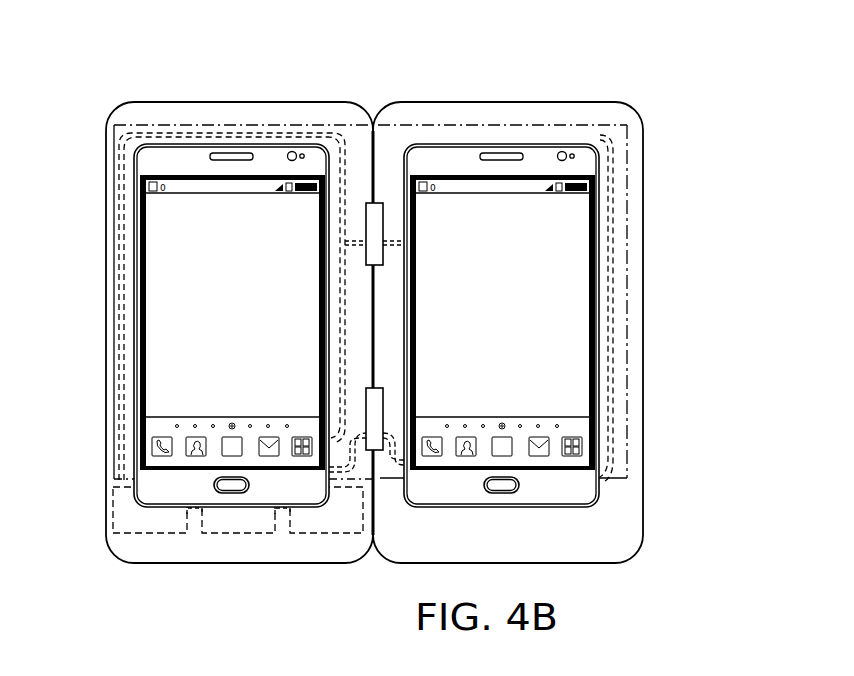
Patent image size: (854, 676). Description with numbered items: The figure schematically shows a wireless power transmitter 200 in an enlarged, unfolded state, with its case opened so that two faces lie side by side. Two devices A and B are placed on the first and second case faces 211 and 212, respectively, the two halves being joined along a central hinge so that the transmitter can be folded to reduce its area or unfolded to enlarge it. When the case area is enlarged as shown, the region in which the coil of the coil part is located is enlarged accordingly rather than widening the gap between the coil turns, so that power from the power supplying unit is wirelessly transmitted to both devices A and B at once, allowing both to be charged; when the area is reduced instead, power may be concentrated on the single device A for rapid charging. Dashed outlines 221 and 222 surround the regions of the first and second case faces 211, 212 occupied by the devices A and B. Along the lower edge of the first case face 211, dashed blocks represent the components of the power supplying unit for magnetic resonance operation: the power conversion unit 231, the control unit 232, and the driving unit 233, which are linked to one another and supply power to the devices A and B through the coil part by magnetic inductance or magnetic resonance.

The wireless power transmitter 200 is at (328, 76).
The first case face 211 is at (236, 103).
The second case face 212 is at (510, 108).
The first accommodating part 221 is at (128, 133).
The second accommodating part 222 is at (612, 227).
The power conversion unit 231 is at (325, 534).
The control unit 232 is at (237, 534).
The driving unit 233 is at (148, 534).
The device A is at (178, 145).
The device B is at (546, 143).